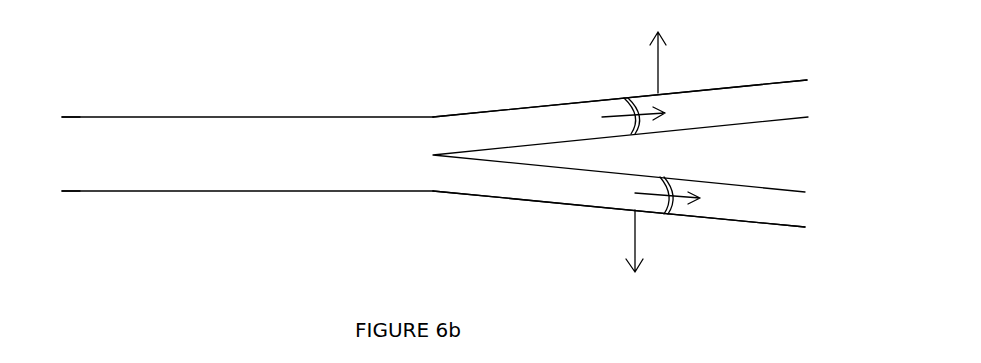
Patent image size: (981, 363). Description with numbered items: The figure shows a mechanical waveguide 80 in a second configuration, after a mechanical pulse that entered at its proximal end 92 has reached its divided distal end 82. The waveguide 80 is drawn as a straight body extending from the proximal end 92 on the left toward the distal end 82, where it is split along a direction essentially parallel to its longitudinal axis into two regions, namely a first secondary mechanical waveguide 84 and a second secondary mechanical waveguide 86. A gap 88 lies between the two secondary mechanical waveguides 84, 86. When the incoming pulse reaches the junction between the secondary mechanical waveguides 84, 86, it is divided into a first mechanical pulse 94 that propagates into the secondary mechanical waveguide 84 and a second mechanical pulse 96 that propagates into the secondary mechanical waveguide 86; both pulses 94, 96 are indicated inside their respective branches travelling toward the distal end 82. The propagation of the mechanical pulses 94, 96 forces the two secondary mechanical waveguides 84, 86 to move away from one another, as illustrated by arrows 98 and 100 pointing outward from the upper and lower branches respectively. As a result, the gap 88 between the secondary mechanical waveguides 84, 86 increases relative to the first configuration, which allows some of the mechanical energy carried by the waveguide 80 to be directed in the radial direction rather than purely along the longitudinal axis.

The mechanical waveguide 80 is at (242, 117).
The distal end 82 is at (516, 77).
The secondary mechanical waveguide 84 is at (777, 82).
The secondary mechanical waveguide 86 is at (490, 197).
The gap 88 is at (779, 146).
The proximal end 92 is at (87, 98).
The first mechanical pulse 94 is at (627, 97).
The second mechanical pulse 96 is at (665, 215).
The arrow 98 is at (657, 62).
The arrow 100 is at (633, 238).